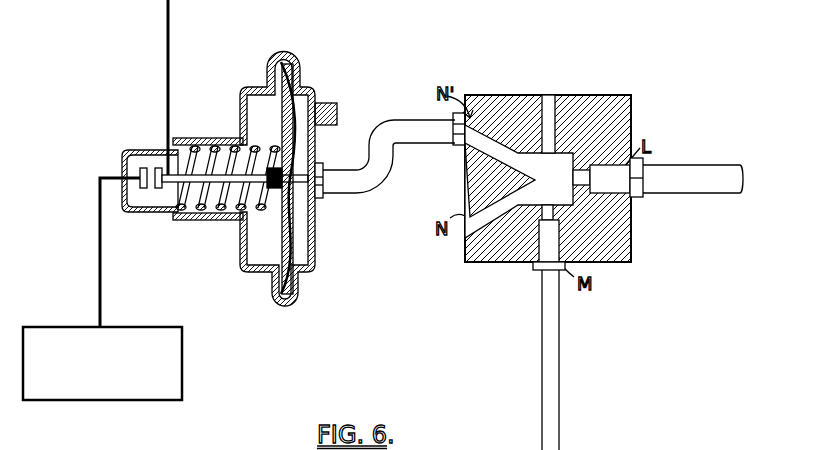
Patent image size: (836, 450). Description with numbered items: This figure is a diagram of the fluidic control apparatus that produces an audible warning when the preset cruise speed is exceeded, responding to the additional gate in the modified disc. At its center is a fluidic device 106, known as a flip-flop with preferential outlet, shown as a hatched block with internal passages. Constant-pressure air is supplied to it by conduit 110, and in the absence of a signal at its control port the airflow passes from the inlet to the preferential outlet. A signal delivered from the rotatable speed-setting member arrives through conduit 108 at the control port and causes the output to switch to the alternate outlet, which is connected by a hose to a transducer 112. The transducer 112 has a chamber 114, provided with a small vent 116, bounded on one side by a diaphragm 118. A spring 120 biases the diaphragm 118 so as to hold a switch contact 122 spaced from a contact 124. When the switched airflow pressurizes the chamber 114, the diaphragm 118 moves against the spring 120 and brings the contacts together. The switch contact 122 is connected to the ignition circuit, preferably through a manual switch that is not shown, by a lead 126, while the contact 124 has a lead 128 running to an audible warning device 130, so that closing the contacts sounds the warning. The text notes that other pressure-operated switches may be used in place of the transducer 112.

The fluidic device 106 is at (623, 103).
The conduit 108 is at (555, 415).
The conduit 110 is at (695, 187).
The transducer 112 is at (313, 220).
The chamber 114 is at (303, 242).
The vent 116 is at (337, 113).
The diaphragm 118 is at (300, 260).
The spring 120 is at (198, 221).
The switch contact 122 is at (155, 167).
The contact 124 is at (127, 165).
The lead 126 is at (165, 75).
The lead 128 is at (100, 237).
The audible warning device 130 is at (152, 395).